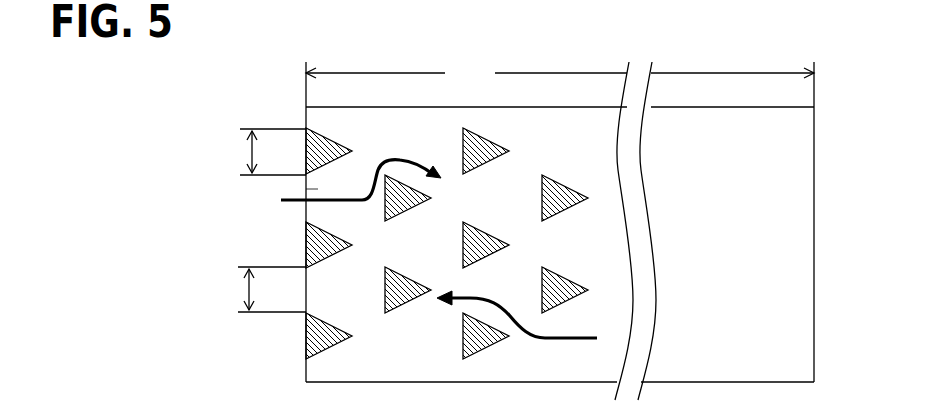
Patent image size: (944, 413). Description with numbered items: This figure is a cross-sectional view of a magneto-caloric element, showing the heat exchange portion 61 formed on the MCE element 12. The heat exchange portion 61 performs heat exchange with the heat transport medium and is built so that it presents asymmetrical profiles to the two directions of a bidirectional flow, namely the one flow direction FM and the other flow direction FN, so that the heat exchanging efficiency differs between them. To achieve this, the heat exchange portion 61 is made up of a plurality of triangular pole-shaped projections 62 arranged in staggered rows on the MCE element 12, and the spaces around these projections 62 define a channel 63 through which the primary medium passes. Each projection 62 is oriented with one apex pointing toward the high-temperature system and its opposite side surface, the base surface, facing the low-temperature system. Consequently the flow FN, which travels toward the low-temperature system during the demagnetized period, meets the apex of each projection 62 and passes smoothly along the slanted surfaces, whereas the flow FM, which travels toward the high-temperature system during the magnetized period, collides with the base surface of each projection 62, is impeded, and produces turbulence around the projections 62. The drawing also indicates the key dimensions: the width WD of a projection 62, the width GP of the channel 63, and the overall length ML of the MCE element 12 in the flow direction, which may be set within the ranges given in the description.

The MCE element 12 is at (307, 118).
The heat exchange portion 61 is at (149, 182).
The projection 62 is at (306, 240).
The channel 63 is at (317, 189).
The length of the MCE element ML is at (560, 74).
The width of the projection WD is at (251, 152).
The width of the channel GP is at (251, 289).
The flow direction toward the high-temperature system FM is at (361, 166).
The flow direction toward the low-temperature system FN is at (517, 309).